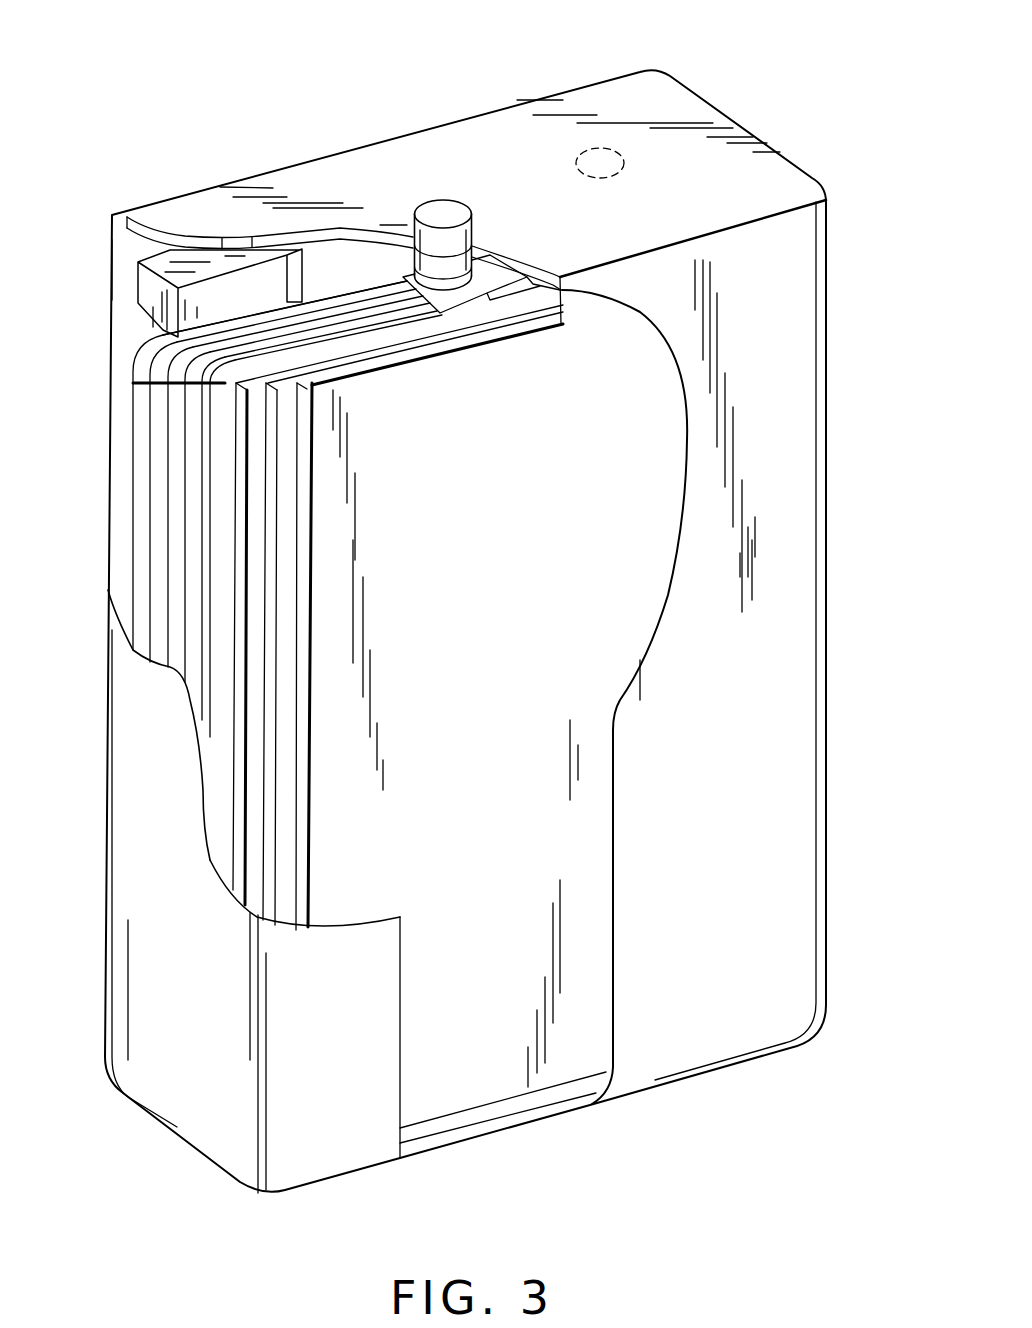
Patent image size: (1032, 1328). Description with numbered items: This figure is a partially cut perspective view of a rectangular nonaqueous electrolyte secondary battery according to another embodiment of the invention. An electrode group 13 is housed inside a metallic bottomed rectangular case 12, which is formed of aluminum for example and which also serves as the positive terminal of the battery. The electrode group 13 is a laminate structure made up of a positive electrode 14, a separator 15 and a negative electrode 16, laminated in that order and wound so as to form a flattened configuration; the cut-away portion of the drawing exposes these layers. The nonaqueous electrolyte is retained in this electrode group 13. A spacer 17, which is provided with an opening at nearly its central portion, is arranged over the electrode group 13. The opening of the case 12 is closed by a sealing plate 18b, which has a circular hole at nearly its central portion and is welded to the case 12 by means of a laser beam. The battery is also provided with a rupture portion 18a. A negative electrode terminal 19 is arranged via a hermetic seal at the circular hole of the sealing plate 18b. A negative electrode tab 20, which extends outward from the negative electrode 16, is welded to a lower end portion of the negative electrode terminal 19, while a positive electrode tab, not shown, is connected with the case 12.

The case 12 is at (795, 368).
The electrode group 13 is at (348, 605).
The positive electrode 14 is at (372, 555).
The separator 15 is at (285, 645).
The negative electrode 16 is at (255, 695).
The spacer 17 is at (160, 298).
The rupture portion 18a is at (608, 150).
The sealing plate 18b is at (298, 243).
The negative electrode terminal 19 is at (443, 212).
The negative electrode tab 20 is at (477, 300).